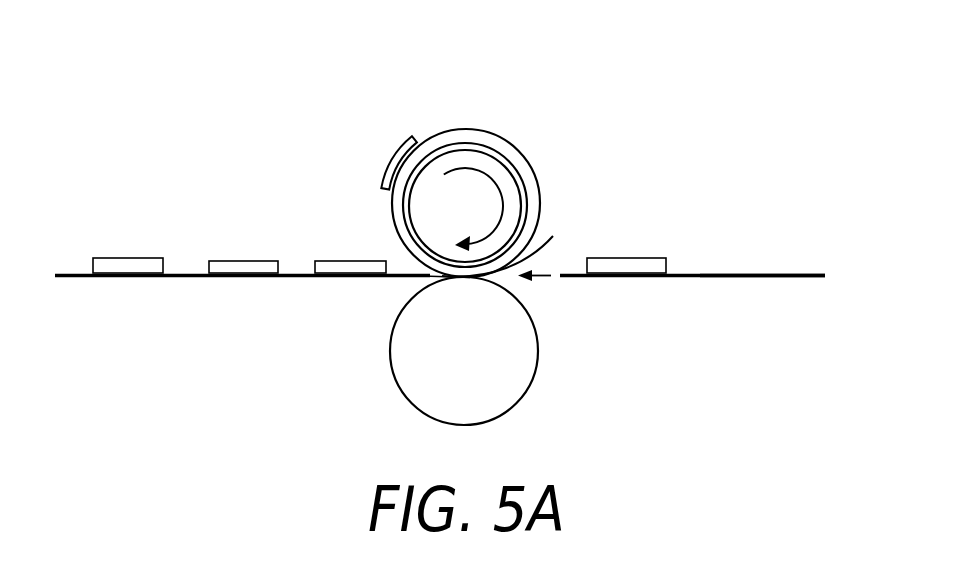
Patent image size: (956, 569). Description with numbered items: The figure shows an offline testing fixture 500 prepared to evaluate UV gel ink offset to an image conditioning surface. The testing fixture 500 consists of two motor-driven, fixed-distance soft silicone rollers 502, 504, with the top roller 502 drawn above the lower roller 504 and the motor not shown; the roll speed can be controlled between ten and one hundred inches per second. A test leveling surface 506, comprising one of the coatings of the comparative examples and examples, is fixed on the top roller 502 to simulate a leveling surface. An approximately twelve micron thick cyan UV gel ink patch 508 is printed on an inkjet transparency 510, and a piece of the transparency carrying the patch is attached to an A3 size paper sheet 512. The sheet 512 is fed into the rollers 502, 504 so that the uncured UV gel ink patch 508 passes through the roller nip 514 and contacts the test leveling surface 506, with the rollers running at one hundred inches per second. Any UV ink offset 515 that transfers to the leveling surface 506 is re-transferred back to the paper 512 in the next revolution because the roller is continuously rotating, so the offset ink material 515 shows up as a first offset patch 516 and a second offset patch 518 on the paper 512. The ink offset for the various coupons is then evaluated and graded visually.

The testing fixture 500 is at (550, 80).
The top roller 502 is at (458, 153).
The soft silicone roller 504 is at (508, 343).
The test leveling surface 506 is at (537, 175).
The UV gel ink patch 508 is at (622, 258).
The inkjet transparency 510 is at (747, 273).
The paper sheet 512 is at (307, 277).
The roller nip 514 is at (513, 243).
The UV ink offset 515 is at (392, 160).
The first offset patch 516 is at (235, 258).
The second offset patch 518 is at (342, 261).